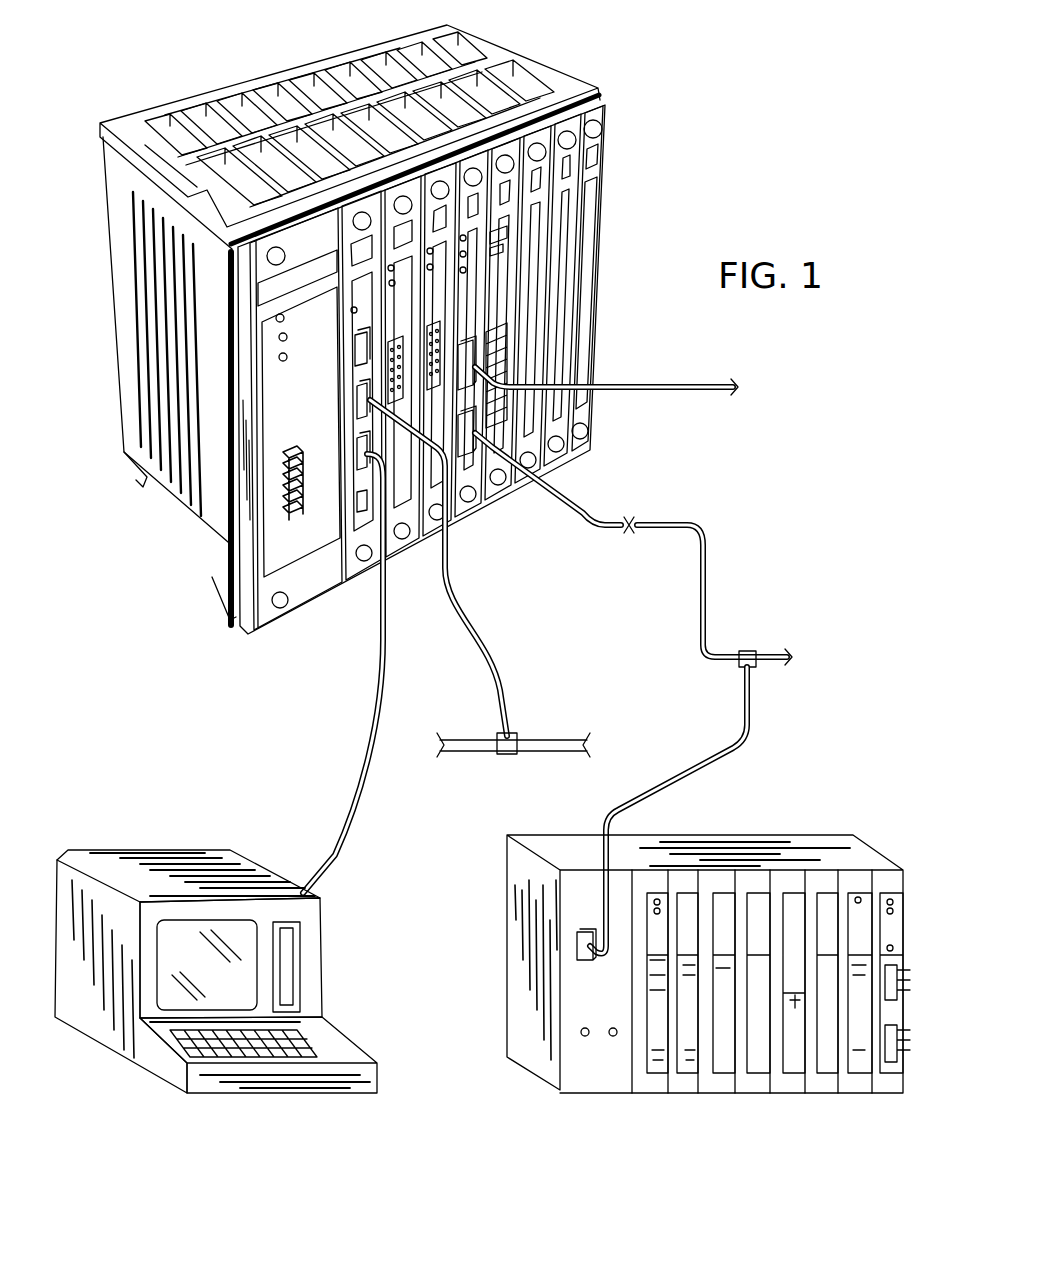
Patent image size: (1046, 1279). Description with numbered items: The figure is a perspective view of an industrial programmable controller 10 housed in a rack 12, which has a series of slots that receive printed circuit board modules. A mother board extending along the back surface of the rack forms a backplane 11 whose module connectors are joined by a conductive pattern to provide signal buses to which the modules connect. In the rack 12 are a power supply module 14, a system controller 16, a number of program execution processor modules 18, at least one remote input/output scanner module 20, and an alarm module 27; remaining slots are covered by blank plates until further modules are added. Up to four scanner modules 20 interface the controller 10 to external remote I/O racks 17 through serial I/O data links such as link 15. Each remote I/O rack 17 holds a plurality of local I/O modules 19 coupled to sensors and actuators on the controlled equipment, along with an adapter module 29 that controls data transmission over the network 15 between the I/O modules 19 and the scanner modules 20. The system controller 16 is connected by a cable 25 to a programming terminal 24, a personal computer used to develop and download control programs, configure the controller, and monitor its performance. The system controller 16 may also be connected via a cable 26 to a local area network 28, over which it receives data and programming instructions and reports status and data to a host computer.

The programmable controller 10 is at (208, 541).
The backplane 11 is at (311, 62).
The rack 12 is at (183, 507).
The power supply module 14 is at (333, 597).
The system controller 16 is at (367, 577).
The program execution processor module 18 is at (407, 547).
The remote input/output scanner module 20 is at (497, 346).
The alarm module 27 is at (502, 492).
The serial I/O data link 15 is at (705, 393).
The programming terminal cable 25 is at (364, 790).
The cable 26 is at (503, 673).
The local area network 28 is at (470, 738).
The programming terminal 24 is at (312, 948).
The remote I/O rack 17 is at (683, 988).
The local I/O module 19 is at (793, 1087).
The adapter module 29 is at (618, 1083).